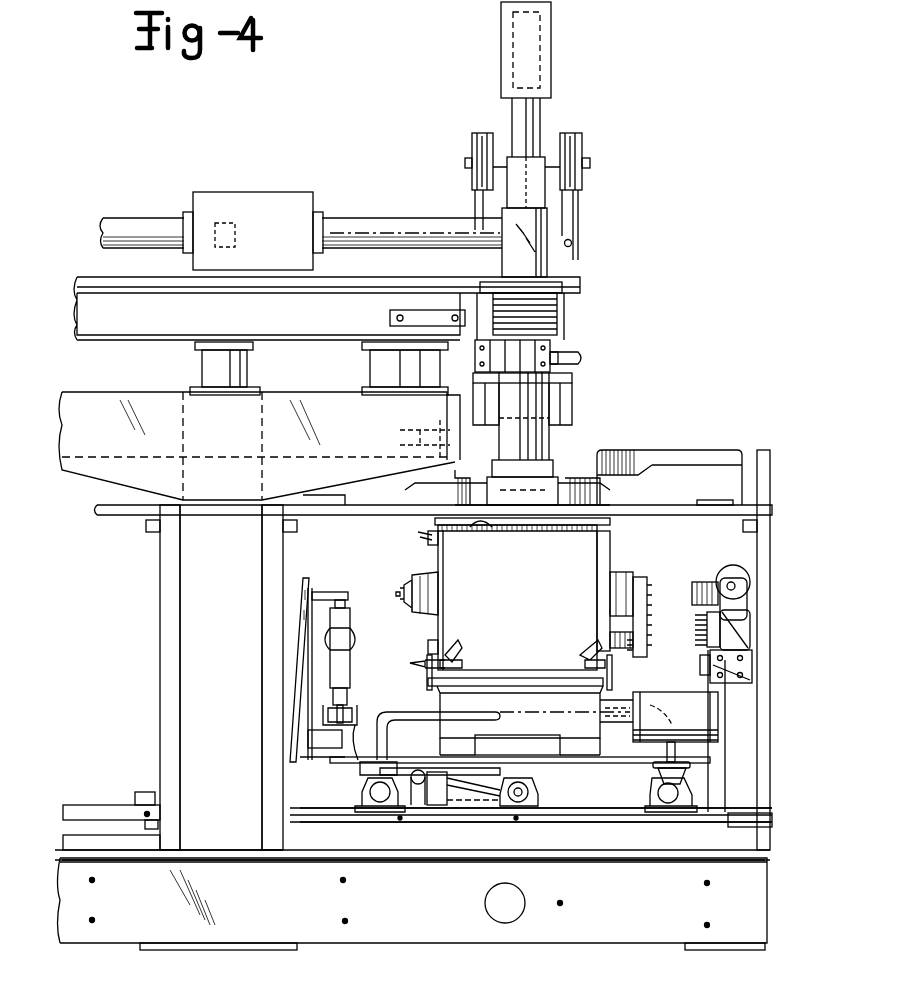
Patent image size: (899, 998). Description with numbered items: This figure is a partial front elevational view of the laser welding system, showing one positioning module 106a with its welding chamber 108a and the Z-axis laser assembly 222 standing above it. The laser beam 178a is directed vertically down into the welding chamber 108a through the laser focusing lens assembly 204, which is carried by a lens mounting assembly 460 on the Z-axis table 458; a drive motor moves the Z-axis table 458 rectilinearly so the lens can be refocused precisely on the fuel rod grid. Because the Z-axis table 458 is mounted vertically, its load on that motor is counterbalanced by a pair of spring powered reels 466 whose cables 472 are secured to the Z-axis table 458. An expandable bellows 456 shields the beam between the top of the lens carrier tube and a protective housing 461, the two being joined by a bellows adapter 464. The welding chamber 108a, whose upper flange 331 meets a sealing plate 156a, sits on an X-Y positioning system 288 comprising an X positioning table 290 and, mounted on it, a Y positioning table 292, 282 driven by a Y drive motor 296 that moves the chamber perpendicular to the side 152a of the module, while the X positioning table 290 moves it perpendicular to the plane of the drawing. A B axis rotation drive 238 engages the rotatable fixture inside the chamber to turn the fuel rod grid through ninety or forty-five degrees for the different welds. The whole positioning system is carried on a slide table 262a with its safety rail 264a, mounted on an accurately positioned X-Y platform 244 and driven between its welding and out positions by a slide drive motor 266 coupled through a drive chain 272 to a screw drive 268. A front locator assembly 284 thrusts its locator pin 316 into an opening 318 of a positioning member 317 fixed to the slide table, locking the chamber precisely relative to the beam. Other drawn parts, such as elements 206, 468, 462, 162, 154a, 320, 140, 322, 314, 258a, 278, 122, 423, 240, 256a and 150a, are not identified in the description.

The drive unit 206 is at (500, 70).
The spring powered reels 466 is at (583, 146).
The cables 472 is at (578, 220).
The pin 468 is at (572, 245).
The protective housing 461 is at (549, 265).
The bellows adapter 464 is at (557, 305).
The Z-axis laser assembly 222 is at (582, 317).
The bearing block 462 is at (555, 347).
The lens mounting assembly 460 is at (575, 365).
The Z-axis table 458 is at (560, 388).
The laser focusing lens assembly 204 is at (563, 446).
The cover 156a is at (600, 502).
The bellows 456 is at (495, 316).
The beam 162 is at (110, 320).
The frame column 154a is at (280, 553).
The bracket 320 is at (328, 588).
The frame 140 is at (240, 604).
The plate 322 is at (300, 636).
The cylinder 314 is at (330, 660).
The front locator assembly 284 is at (311, 680).
The locator pin 316 is at (312, 741).
The opening 318 is at (320, 757).
The Y positioning table 282 is at (350, 792).
The rail 258a is at (300, 812).
The X-Y platform 244 is at (300, 835).
The bearing 278 is at (378, 805).
The slide drive motor 266 is at (432, 805).
The drive chain 272 is at (485, 805).
The base 122 is at (408, 957).
The positioning member 317 is at (360, 730).
The positioning module 106a is at (432, 529).
The upper flange 331 is at (482, 530).
The laser beam 178a is at (530, 530).
The welding chamber 108a is at (545, 606).
The pipe 264a is at (470, 720).
The Y positioning table 292 is at (508, 700).
The clamp 423 is at (566, 655).
The X positioning table 290 is at (565, 740).
The X-Y positioning system 288 is at (622, 756).
The disk 240 is at (656, 597).
The B axis rotation drive 238 is at (758, 580).
The Y drive motor 296 is at (712, 708).
The post 152a is at (768, 745).
The bracket 256a is at (756, 803).
The base plate 150a is at (680, 850).
The screw drive 268 is at (530, 795).
The shaft 262a is at (618, 770).